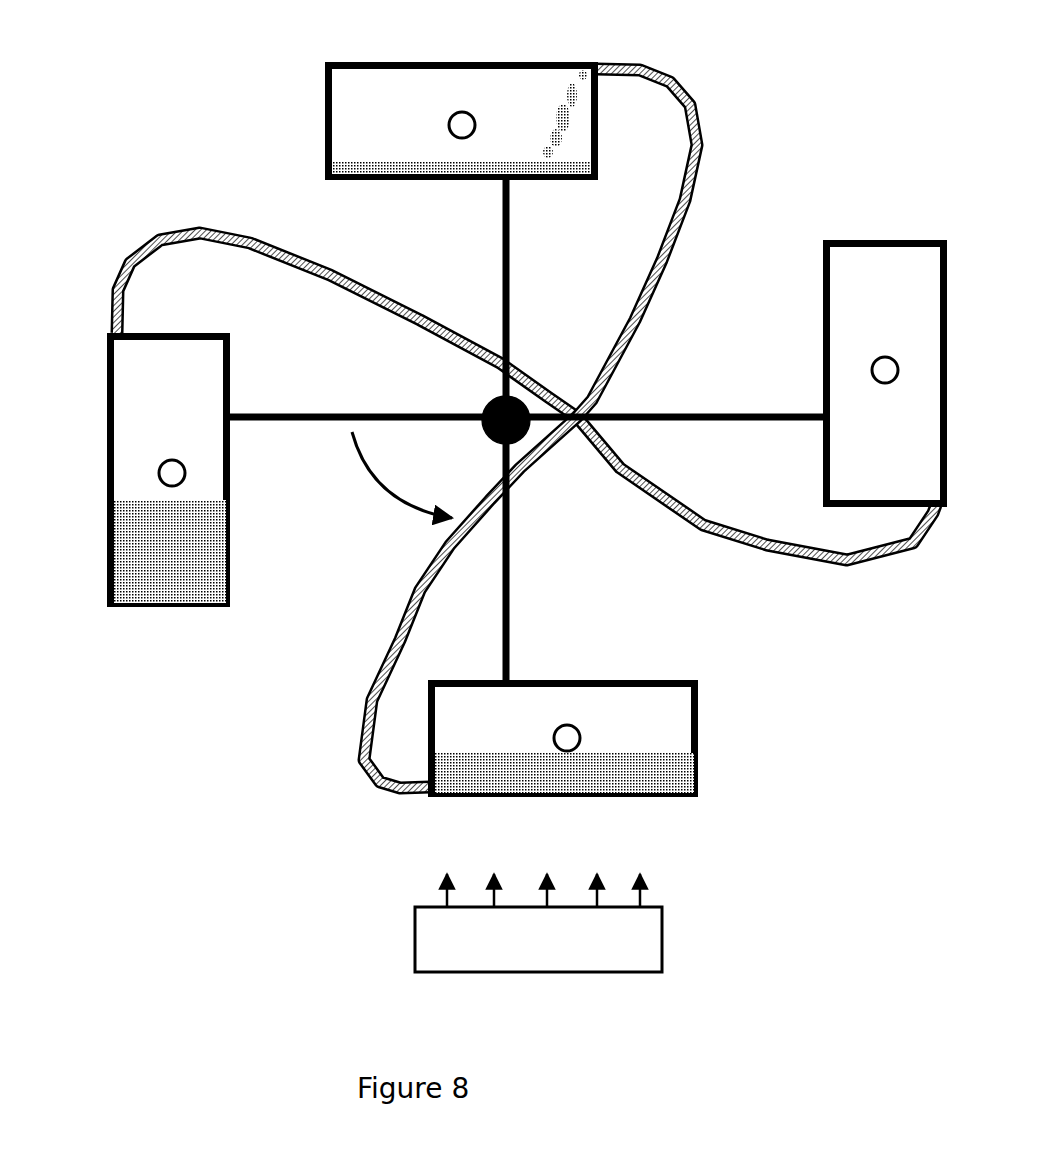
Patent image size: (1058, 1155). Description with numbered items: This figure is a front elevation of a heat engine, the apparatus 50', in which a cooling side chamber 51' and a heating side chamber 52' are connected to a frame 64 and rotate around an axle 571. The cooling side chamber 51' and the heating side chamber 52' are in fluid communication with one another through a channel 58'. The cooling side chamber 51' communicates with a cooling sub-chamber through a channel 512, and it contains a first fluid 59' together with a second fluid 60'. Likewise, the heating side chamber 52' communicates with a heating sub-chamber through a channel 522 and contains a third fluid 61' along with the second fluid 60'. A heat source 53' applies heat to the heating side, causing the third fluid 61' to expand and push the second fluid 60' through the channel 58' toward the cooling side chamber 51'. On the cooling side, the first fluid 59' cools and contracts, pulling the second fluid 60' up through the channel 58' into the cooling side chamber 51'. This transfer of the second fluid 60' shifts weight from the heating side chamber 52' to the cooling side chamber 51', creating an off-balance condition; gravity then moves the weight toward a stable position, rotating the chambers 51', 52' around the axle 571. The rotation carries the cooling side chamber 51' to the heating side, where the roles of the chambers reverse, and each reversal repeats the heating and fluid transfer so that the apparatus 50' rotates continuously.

The apparatus 50' is at (453, 481).
The cooling side chamber 51' is at (400, 108).
The channel 512 is at (468, 112).
The first fluid 59' is at (406, 132).
The frame 64 is at (503, 255).
The axle 571 is at (466, 392).
The channel 58' is at (526, 428).
The heating side chamber 52' is at (622, 711).
The channel 522 is at (572, 723).
The third fluid 61' is at (623, 720).
The second fluid 60' is at (623, 780).
The heat source 53' is at (468, 923).